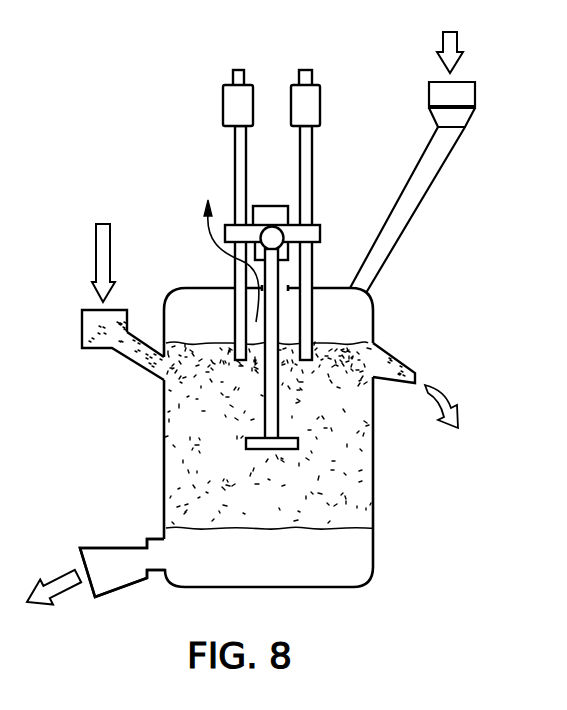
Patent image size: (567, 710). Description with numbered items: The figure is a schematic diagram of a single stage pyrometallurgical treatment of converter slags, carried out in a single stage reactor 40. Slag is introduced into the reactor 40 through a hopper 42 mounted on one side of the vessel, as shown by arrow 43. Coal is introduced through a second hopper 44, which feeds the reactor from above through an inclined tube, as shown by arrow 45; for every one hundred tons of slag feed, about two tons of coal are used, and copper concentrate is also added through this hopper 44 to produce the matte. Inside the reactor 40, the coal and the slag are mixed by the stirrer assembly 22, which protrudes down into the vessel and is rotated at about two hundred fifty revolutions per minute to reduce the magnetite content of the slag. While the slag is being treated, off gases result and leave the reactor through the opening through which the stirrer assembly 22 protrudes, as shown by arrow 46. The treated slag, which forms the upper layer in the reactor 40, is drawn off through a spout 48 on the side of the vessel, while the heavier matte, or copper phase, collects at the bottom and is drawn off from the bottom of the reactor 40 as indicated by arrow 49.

The stirrer assembly 22 is at (341, 130).
The single stage reactor 40 is at (392, 528).
The hopper 42 is at (108, 349).
The arrow 43 is at (110, 244).
The hopper 44 is at (441, 166).
The arrow 45 is at (457, 42).
The arrow 46 is at (212, 253).
The spout 48 is at (400, 363).
The arrow 49 is at (73, 593).